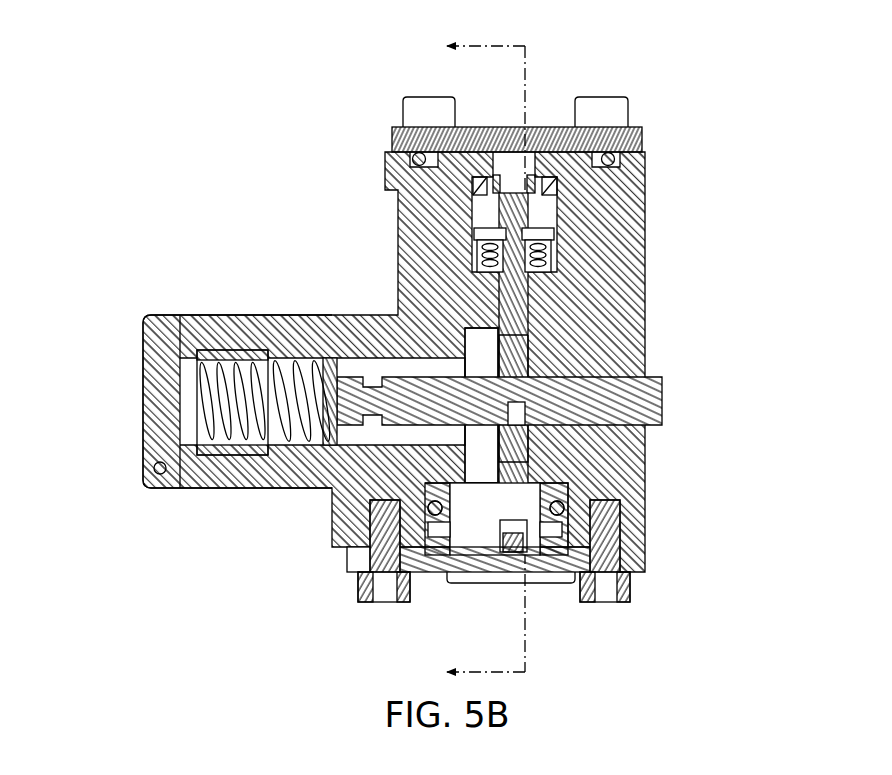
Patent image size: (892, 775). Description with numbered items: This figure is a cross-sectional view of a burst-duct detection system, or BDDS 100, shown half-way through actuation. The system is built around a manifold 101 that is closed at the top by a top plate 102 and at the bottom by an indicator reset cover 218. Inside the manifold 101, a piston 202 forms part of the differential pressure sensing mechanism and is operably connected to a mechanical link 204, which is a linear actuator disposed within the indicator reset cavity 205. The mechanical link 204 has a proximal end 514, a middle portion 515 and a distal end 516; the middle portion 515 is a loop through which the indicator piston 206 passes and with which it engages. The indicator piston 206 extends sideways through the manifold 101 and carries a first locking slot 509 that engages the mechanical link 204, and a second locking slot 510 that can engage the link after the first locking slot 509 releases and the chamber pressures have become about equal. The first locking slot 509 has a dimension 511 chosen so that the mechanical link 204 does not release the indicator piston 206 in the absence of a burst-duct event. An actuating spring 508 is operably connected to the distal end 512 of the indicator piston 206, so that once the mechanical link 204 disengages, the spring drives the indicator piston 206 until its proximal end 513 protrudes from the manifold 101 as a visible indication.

The BDDS 100 is at (618, 47).
The manifold 101 is at (625, 226).
The top plate 102 is at (395, 138).
The piston 202 is at (530, 212).
The mechanical link 204 is at (515, 300).
The indicator reset cavity 205 is at (485, 512).
The indicator piston 206 is at (483, 375).
The indicator reset cover 218 is at (432, 558).
The actuating spring 508 is at (263, 315).
The first locking slot 509 is at (530, 448).
The second locking slot 510 is at (375, 385).
The dimension 511 is at (532, 406).
The distal end 512 is at (325, 440).
The proximal end 513 is at (640, 408).
The proximal end 514 is at (530, 292).
The middle portion 515 is at (513, 343).
The distal end 516 is at (497, 537).